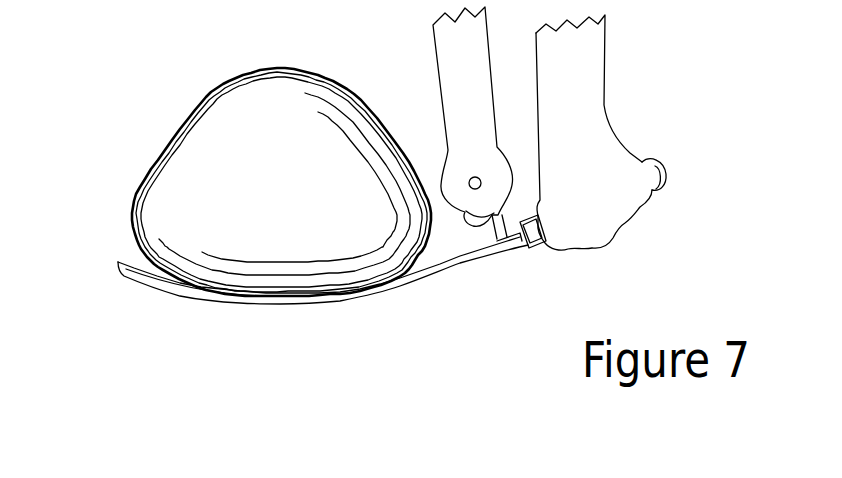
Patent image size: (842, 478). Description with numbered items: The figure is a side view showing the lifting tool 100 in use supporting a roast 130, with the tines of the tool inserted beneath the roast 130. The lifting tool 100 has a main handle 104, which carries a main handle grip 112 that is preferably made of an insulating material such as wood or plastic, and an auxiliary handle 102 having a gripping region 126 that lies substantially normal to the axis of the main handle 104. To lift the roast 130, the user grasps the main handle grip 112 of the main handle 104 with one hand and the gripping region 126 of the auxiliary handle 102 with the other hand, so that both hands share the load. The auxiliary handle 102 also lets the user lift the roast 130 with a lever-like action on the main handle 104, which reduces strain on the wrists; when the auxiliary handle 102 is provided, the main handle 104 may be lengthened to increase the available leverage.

The roast 130 is at (193, 153).
The lifting tool 100 is at (427, 310).
The gripping region 126 is at (470, 177).
The auxiliary handle 102 is at (488, 232).
The main handle 104 is at (653, 153).
The main handle grip 112 is at (665, 180).